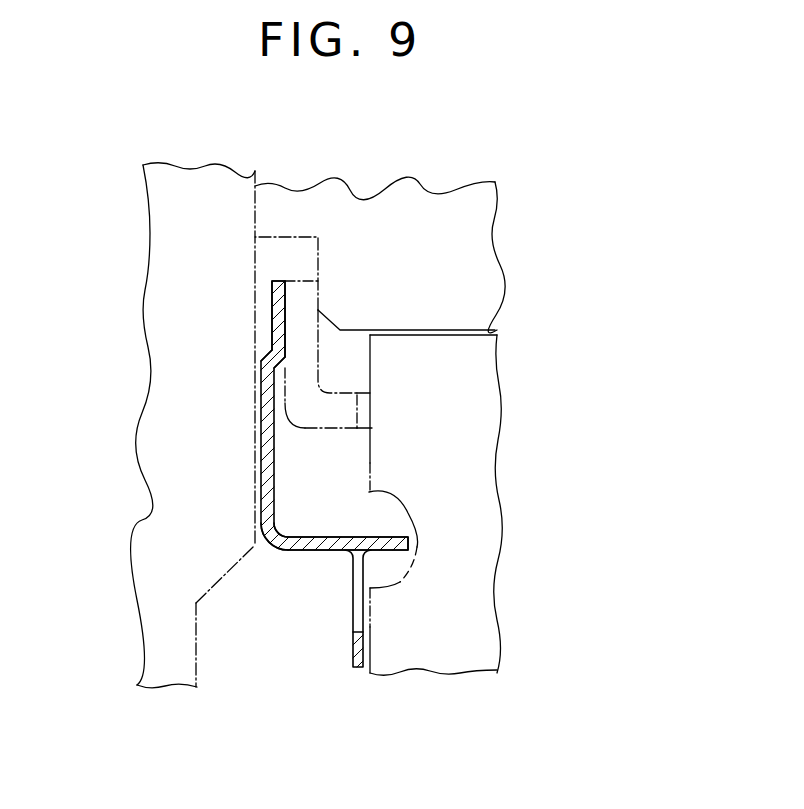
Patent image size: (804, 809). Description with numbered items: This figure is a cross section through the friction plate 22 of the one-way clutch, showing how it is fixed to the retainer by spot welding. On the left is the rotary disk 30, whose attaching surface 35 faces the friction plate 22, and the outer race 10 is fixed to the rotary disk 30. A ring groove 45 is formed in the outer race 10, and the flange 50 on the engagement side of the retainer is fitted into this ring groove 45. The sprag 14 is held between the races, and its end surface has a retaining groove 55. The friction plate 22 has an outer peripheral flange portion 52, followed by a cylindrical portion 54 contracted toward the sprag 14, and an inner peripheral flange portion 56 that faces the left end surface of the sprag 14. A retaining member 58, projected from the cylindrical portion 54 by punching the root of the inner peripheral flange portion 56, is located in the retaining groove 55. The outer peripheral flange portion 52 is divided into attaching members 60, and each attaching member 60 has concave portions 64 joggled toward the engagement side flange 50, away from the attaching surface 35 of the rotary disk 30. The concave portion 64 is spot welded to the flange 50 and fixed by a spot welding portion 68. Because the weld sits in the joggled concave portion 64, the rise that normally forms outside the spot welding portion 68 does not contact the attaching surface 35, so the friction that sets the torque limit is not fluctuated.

The outer race 10 is at (419, 231).
The sprag 14 is at (476, 505).
The friction plate 22 is at (325, 645).
The rotary disk 30 is at (158, 198).
The attaching surface 35 is at (257, 268).
The ring groove 45 is at (280, 238).
The flange on the engagement side 50 is at (303, 298).
The outer peripheral flange portion 52 is at (257, 490).
The cylindrical portion 54 is at (288, 548).
The retaining groove 55 is at (395, 578).
The inner peripheral flange portion 56 is at (355, 668).
The retaining member 58 is at (400, 517).
The attaching member 60 is at (243, 442).
The concave portion 64 is at (277, 300).
The spot welding portion 68 is at (280, 338).